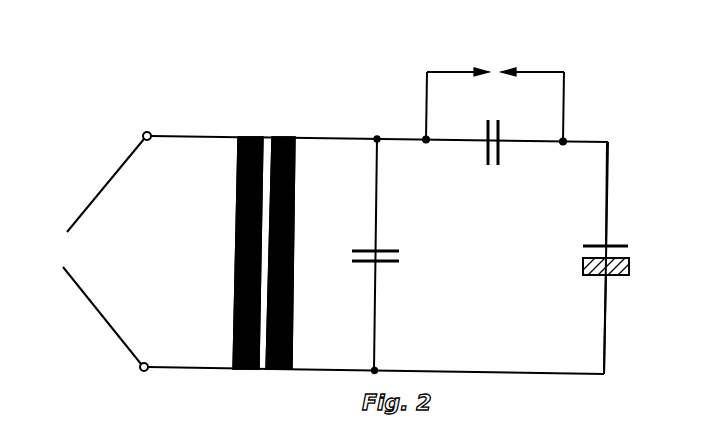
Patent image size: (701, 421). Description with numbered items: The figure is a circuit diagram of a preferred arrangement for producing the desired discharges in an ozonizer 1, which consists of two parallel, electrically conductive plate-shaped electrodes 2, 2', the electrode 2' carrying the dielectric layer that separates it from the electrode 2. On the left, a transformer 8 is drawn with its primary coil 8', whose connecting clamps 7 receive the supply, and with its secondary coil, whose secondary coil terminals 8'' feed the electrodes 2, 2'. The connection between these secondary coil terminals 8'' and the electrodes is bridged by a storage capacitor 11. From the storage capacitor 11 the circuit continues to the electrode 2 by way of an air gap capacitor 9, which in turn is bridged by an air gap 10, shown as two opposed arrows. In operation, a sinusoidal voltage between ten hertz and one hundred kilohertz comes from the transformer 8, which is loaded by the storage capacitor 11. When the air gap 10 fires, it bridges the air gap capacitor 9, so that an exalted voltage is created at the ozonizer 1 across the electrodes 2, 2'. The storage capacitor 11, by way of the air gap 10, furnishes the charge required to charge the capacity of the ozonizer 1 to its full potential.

The ozonizer 1 is at (582, 256).
The electrode 2 is at (587, 194).
The electrode 2' is at (586, 316).
The connecting clamps 7 is at (99, 251).
The transformer 8 is at (264, 275).
The primary coil 8' is at (228, 211).
The secondary coil terminals 8'' is at (298, 213).
The air gap capacitor 9 is at (492, 168).
The air gap 10 is at (497, 68).
The storage capacitor 11 is at (395, 265).